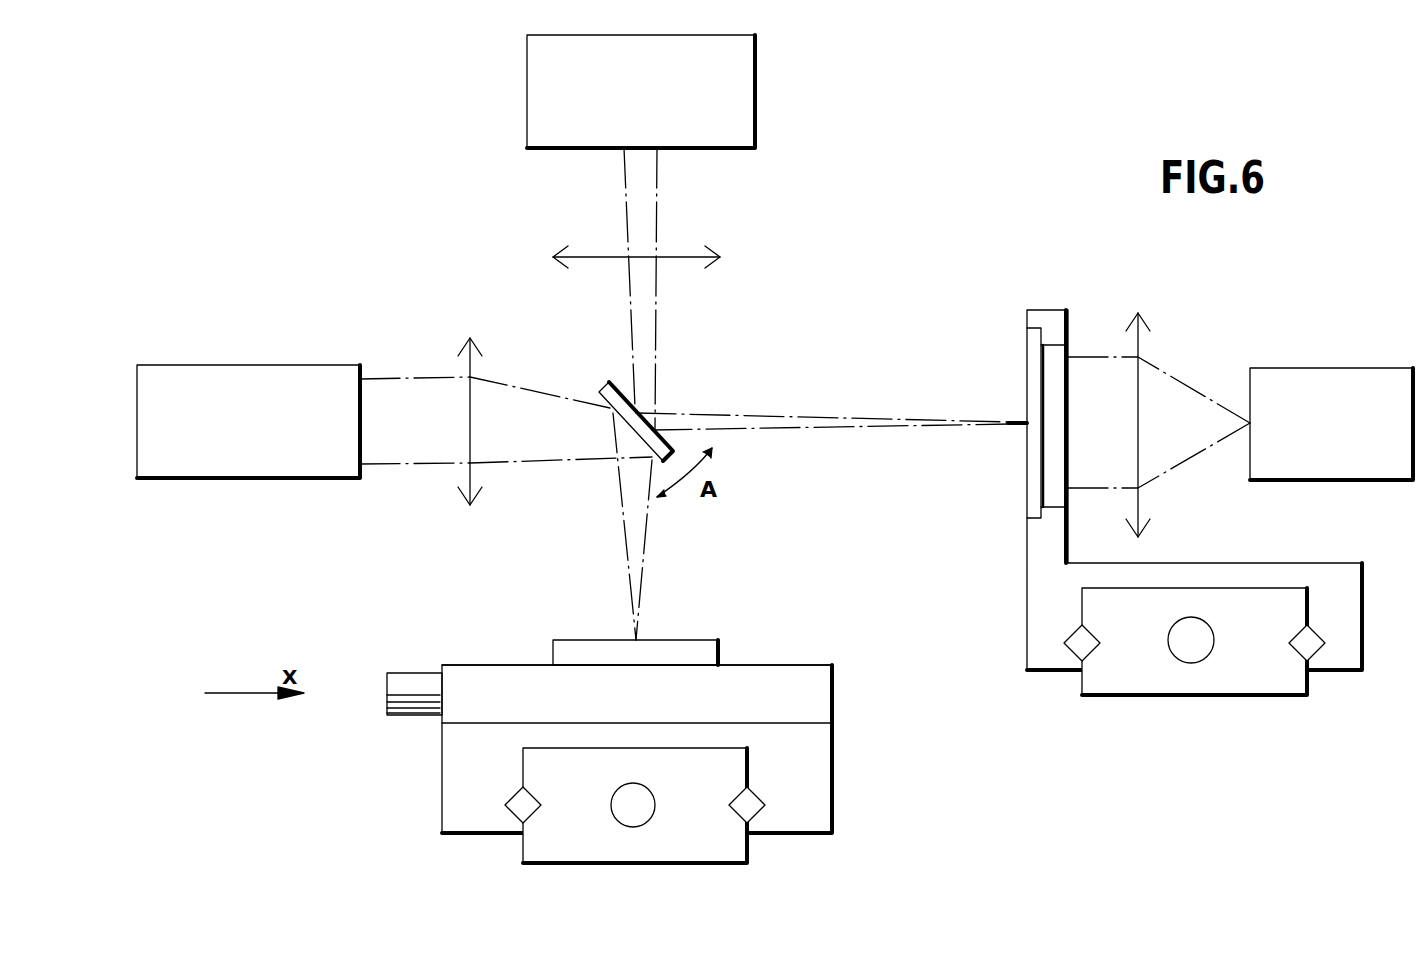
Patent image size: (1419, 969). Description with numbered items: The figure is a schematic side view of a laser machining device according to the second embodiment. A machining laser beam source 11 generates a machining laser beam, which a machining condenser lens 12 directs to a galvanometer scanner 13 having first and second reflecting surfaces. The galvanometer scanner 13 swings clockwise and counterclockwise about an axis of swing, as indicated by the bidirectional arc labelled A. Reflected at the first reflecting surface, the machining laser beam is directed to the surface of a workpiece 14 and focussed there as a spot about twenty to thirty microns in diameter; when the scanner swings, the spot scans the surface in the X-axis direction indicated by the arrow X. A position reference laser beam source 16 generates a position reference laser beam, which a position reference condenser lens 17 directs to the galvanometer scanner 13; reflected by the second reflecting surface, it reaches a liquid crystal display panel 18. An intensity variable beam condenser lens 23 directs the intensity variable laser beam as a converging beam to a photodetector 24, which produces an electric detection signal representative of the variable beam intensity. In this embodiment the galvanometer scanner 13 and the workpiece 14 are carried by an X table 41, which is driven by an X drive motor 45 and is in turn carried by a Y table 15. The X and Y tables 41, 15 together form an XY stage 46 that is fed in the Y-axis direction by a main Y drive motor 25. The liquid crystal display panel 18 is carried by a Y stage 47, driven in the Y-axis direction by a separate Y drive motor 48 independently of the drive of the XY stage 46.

The machining laser beam source 11 is at (283, 366).
The machining condenser lens 12 is at (462, 358).
The galvanometer scanner 13 is at (603, 385).
The workpiece 14 is at (722, 652).
The Y table 15 is at (835, 818).
The position reference laser beam source 16 is at (757, 140).
The position reference condenser lens 17 is at (704, 259).
The liquid crystal display panel 18 is at (1025, 362).
The intensity variable beam condenser lens 23 is at (1146, 325).
The photodetector 24 is at (1312, 368).
The main Y drive motor 25 is at (645, 787).
The X table 41 is at (835, 702).
The X drive motor 45 is at (412, 718).
The XY stage 46 is at (836, 766).
The Y stage 47 is at (1025, 617).
The separate Y drive motor 48 is at (1168, 645).